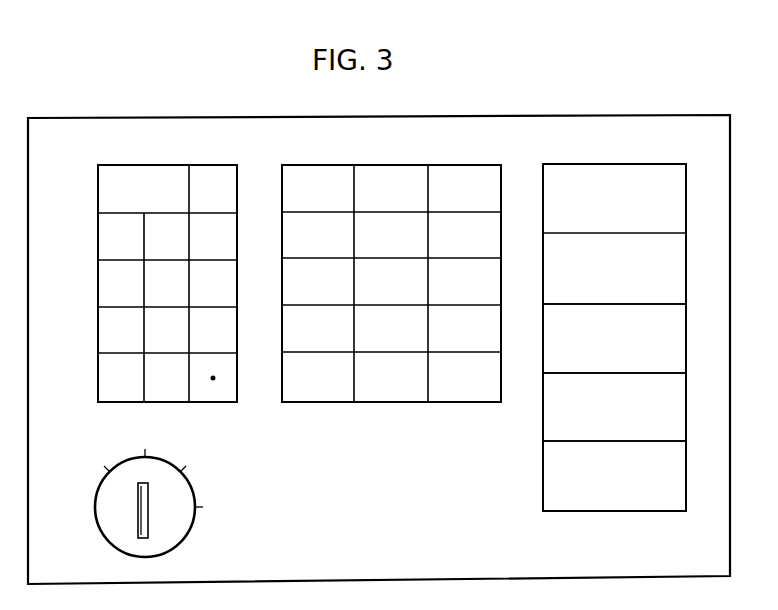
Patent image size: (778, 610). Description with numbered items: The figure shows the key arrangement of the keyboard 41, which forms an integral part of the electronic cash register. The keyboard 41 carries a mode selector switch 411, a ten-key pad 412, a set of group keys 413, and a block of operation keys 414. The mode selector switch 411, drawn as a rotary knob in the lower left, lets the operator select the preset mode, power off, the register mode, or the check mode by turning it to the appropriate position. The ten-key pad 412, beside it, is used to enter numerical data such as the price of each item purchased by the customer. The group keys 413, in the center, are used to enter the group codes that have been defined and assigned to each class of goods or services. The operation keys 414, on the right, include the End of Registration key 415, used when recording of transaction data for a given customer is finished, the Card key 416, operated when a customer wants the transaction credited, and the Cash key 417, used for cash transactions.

The keyboard 41 is at (460, 117).
The mode selector switch 411 is at (186, 536).
The ten-key pad 412 is at (158, 165).
The group keys 413 is at (385, 402).
The operation keys 414 is at (635, 363).
The End of Registration key 415 is at (686, 322).
The Card key 416 is at (686, 393).
The Cash key 417 is at (686, 462).